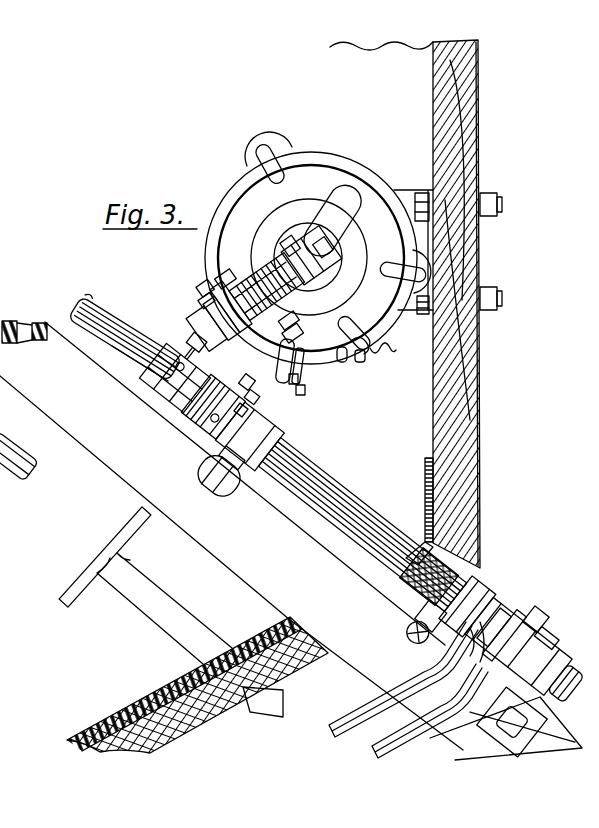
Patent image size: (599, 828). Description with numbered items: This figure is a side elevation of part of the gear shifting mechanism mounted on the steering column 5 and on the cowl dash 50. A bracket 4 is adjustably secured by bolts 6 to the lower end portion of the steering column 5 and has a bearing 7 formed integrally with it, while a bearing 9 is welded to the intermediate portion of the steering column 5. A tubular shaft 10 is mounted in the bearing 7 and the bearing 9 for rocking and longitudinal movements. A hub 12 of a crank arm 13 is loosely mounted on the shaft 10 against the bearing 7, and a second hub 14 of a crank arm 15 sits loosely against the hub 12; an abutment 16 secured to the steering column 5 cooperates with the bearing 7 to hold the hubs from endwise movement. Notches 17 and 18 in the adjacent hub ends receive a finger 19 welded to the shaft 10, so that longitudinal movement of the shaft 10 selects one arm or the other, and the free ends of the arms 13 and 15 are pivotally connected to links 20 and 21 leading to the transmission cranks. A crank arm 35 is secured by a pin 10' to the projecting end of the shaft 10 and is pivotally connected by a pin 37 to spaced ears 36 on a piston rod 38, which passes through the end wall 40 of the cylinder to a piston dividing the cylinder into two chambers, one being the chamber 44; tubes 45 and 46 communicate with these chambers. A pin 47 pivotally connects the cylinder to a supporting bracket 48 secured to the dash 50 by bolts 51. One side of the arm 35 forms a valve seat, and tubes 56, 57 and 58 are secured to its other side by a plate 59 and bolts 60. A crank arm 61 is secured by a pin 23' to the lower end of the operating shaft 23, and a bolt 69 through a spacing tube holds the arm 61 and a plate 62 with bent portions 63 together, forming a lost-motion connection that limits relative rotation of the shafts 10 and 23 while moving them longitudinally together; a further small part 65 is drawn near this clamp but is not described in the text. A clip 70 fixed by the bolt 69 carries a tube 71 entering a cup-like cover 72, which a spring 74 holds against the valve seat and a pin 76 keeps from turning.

The bracket 4 is at (552, 729).
The steering column 5 is at (374, 668).
The bolts 6 is at (493, 730).
The bearing 7 is at (566, 682).
The bearing 9 is at (272, 440).
The tubular shaft 10 is at (362, 524).
The pin 10' is at (209, 467).
The hub 12 is at (535, 617).
The crank arm 13 is at (542, 640).
The second hub 14 is at (490, 598).
The crank arm 15 is at (469, 598).
The abutment 16 is at (410, 629).
The notch 17 is at (514, 615).
The notch 18 is at (503, 612).
The finger 19 is at (462, 664).
The link 20 is at (444, 738).
The link 21 is at (405, 707).
The shaft 23 is at (126, 336).
The pin 23' is at (140, 381).
The crank arm 35 is at (290, 294).
The spaced ears 36 is at (306, 232).
The pin 37 is at (290, 247).
The piston rod 38 is at (314, 240).
The end wall 40 is at (310, 187).
The chamber 44 is at (382, 358).
The tube 45 is at (341, 355).
The tube 46 is at (361, 358).
The pin or bolt 47 is at (360, 357).
The supporting bracket 48 is at (393, 197).
The dash 50 is at (470, 244).
The bolts 51 is at (413, 211).
The tube 56 is at (299, 381).
The tube 57 is at (306, 394).
The tube 58 is at (299, 365).
The plate 59 is at (295, 318).
The bolts 60 is at (300, 333).
The crank arm 61 is at (217, 322).
The plate 62 is at (250, 383).
The bent portions 63 is at (255, 397).
The clamp jaw 65 is at (245, 410).
The bolt 69 is at (188, 343).
The clip 70 is at (212, 310).
The tube 71 is at (226, 281).
The cup-like cover 72 is at (208, 286).
The spring 74 is at (236, 290).
The pin 76 is at (205, 298).